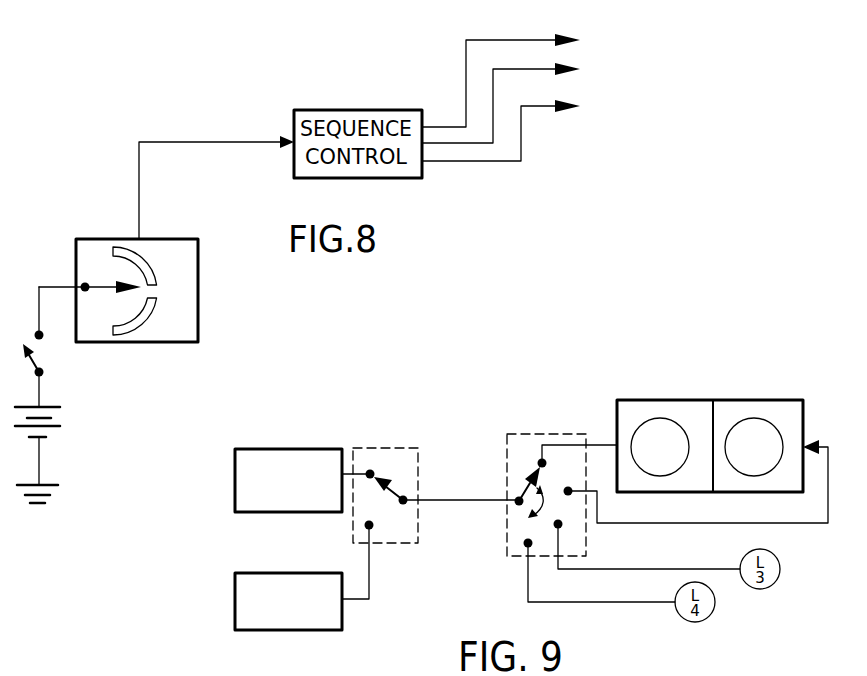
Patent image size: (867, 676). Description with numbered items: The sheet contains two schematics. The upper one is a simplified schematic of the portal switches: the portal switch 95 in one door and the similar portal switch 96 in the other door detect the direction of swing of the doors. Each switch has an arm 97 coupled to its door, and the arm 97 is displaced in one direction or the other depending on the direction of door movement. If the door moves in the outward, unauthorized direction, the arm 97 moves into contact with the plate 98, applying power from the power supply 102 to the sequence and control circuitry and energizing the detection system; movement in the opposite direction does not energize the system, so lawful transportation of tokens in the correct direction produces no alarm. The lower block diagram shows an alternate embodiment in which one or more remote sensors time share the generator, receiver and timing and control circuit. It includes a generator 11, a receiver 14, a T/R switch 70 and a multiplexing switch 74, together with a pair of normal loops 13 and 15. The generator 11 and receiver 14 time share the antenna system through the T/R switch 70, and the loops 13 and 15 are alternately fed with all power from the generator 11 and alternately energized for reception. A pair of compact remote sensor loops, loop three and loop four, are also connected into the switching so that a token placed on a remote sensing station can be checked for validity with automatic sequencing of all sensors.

In FIG. 8, the portal switch 95 is at (165, 238).
In FIG. 8, the portal switch 96 is at (226, 189).
In FIG. 8, the arm 97 is at (97, 286).
In FIG. 8, the plate 98 is at (152, 277).
In FIG. 8, the power supply 102 is at (54, 407).
In FIG. 9, the generator 11 is at (235, 470).
In FIG. 9, the receiver 14 is at (235, 583).
In FIG. 9, the T/R switch 70 is at (412, 448).
In FIG. 9, the multiplexing switch 74 is at (527, 434).
In FIG. 9, the loop 13 is at (675, 421).
In FIG. 9, the loop 15 is at (766, 420).